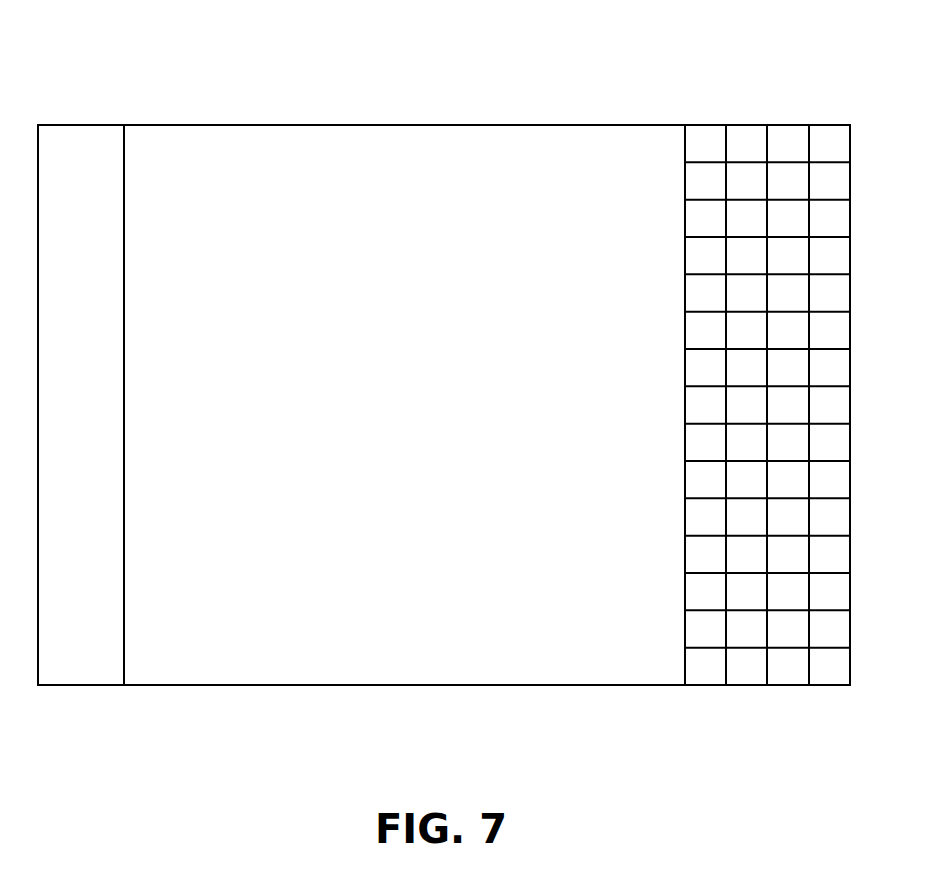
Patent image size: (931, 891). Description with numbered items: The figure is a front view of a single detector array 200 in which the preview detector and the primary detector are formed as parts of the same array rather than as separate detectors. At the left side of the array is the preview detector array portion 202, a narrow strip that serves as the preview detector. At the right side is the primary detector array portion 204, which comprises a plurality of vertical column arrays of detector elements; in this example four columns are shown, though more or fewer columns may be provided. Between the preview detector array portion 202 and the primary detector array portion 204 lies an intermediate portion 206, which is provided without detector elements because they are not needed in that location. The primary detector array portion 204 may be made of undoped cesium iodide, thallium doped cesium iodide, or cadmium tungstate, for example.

The single detector array 200 is at (440, 76).
The preview detector array portion 202 is at (77, 685).
The primary detector array portion 204 is at (767, 72).
The intermediate portion 206 is at (365, 653).